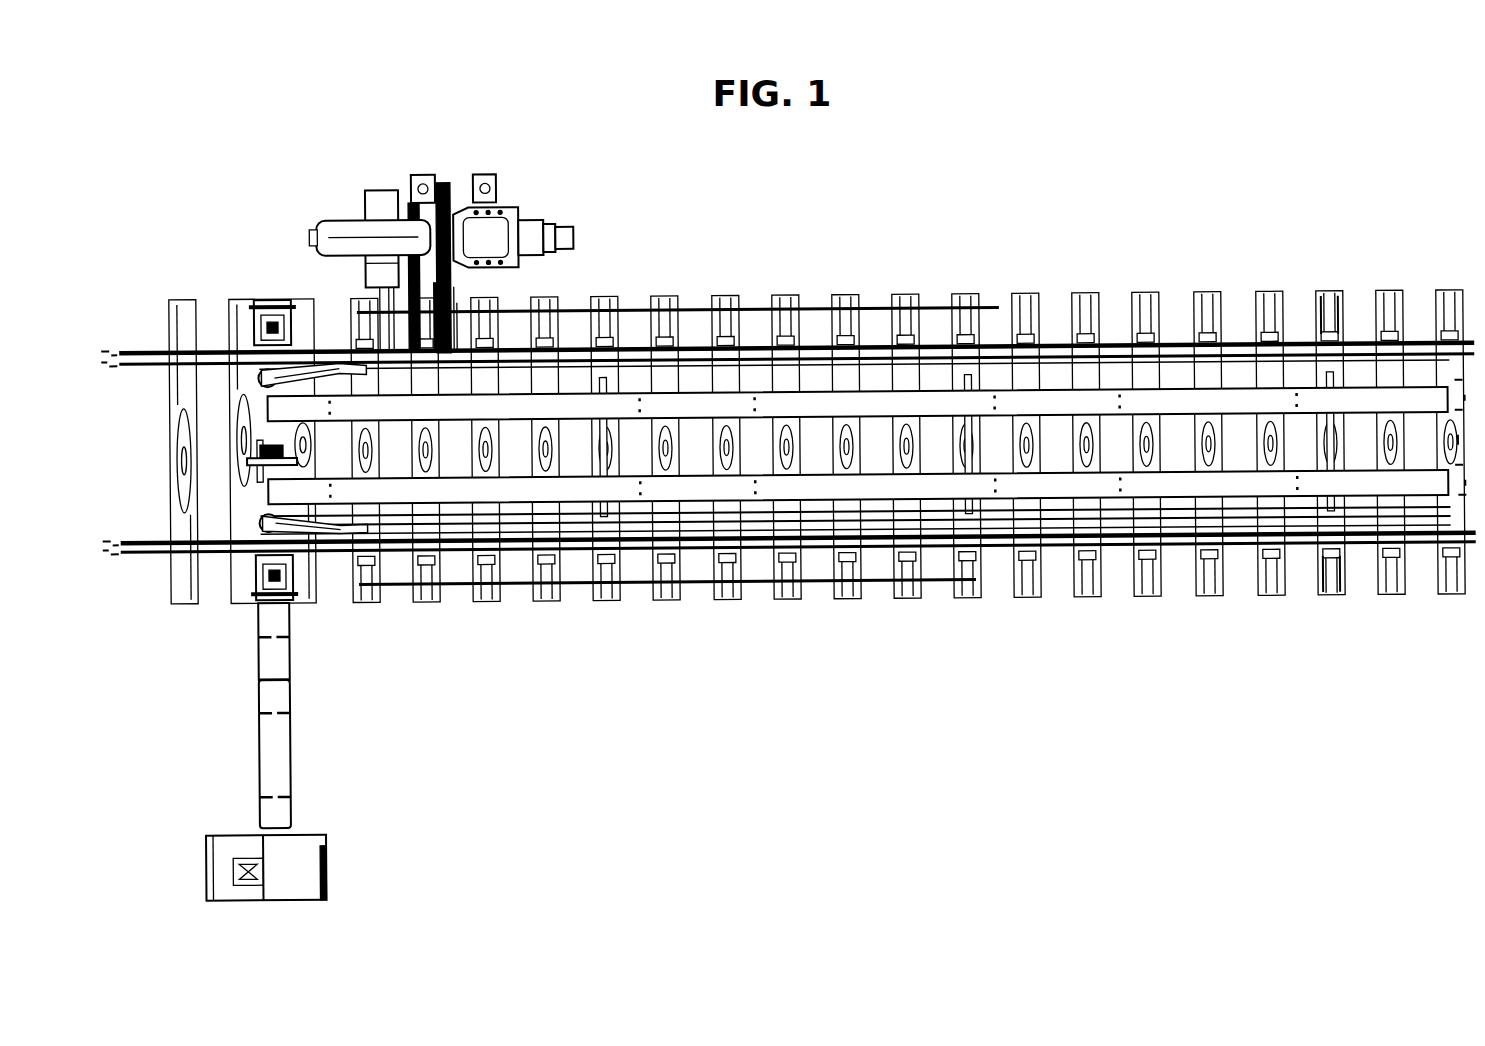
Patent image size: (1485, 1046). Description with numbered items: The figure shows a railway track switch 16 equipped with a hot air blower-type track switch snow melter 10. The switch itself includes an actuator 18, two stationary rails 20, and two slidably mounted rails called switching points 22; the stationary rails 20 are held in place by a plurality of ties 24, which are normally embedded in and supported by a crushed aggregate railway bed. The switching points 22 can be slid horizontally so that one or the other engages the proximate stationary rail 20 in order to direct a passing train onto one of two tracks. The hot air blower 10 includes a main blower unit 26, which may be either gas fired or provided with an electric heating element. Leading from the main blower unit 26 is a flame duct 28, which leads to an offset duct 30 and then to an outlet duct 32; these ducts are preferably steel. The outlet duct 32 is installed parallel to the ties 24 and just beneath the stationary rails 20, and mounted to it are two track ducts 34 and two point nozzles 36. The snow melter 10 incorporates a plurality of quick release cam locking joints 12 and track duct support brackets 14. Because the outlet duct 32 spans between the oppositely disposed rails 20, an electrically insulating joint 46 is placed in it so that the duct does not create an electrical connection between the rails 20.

The hot air blower-type track switch snow melter 10 is at (295, 751).
The quick release cam locking joint 12 is at (262, 300).
The track duct support bracket 14 is at (604, 395).
The railway track switch 16 is at (793, 222).
The actuator 18 is at (345, 222).
The stationary rail 20 is at (1173, 345).
The switching point 22 is at (1300, 355).
The tie 24 is at (792, 298).
The main blower unit 26 is at (323, 847).
The flame duct 28 is at (258, 757).
The offset duct 30 is at (290, 657).
The outlet duct 32 is at (258, 323).
The track duct 34 is at (579, 407).
The point nozzle 36 is at (324, 357).
The electrically insulating joint 46 is at (263, 455).